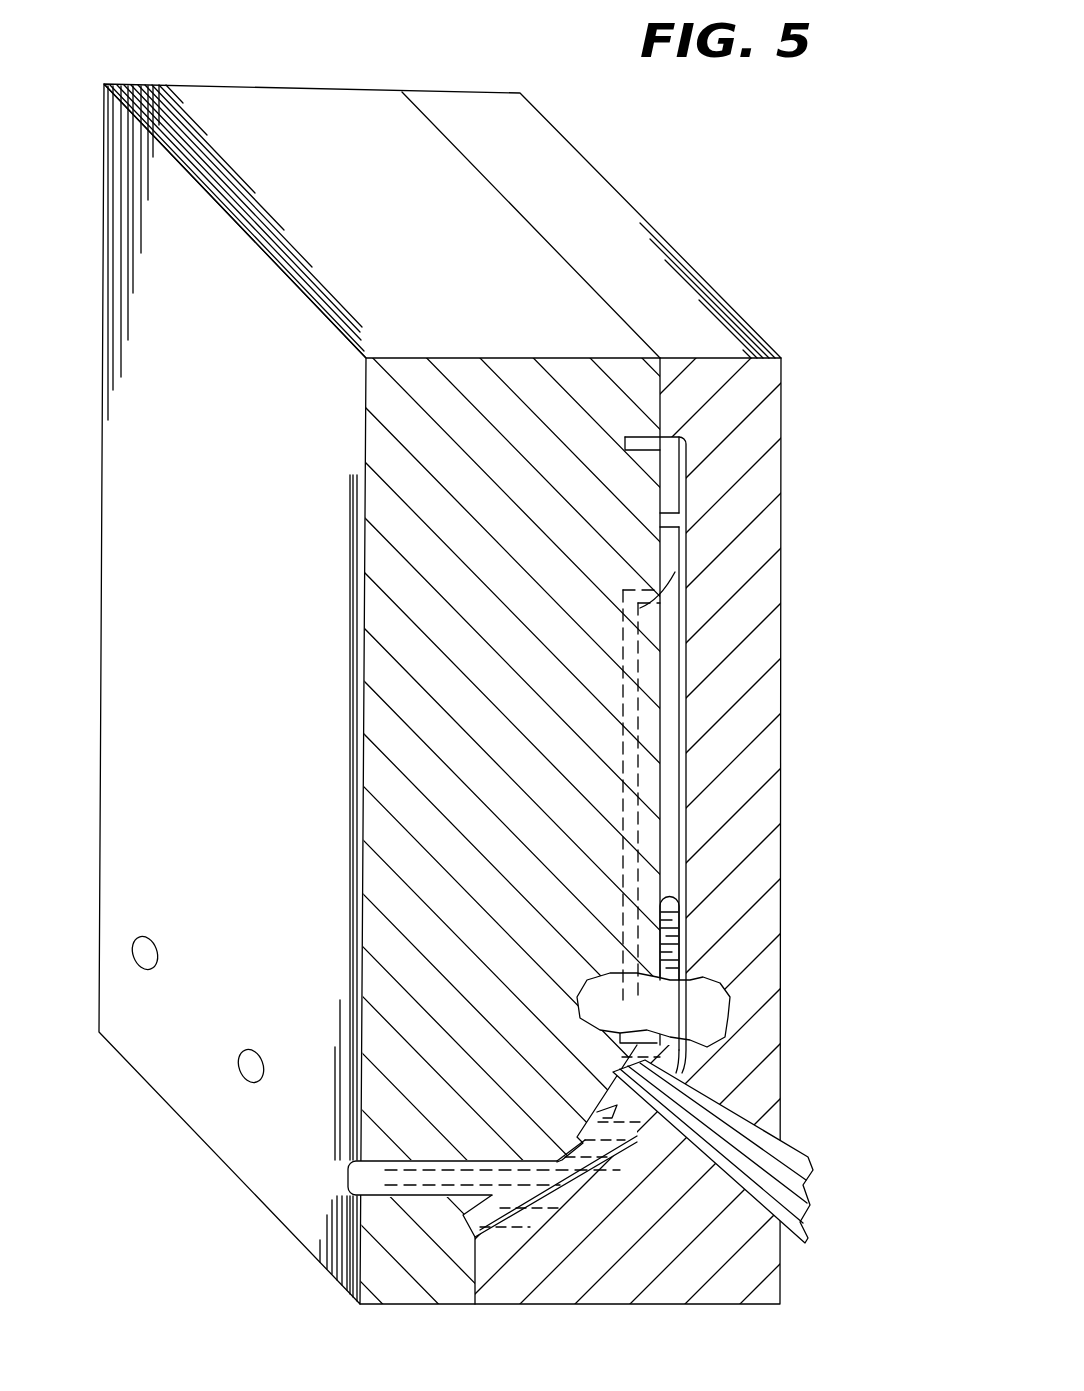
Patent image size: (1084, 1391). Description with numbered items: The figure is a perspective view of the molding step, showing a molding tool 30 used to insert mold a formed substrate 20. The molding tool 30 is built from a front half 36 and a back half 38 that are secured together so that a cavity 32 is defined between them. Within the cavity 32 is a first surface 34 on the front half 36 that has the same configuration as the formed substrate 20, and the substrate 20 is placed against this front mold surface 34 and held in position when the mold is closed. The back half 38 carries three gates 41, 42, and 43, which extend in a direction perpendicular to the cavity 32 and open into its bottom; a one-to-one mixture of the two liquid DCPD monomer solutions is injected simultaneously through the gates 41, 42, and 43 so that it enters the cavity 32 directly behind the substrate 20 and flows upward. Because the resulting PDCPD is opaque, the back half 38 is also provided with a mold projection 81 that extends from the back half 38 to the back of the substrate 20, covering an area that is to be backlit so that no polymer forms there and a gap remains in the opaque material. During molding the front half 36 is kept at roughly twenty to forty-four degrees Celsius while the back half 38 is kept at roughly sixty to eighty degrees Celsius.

The molding tool 30 is at (712, 248).
The formed substrate 20 is at (700, 485).
The cavity 32 is at (685, 568).
The first surface 34 is at (680, 706).
The front half 36 is at (767, 390).
The back half 38 is at (373, 405).
The gate 41 is at (80, 953).
The gate 42 is at (190, 1066).
The gate 43 is at (360, 1178).
The mold projection 81 is at (670, 520).